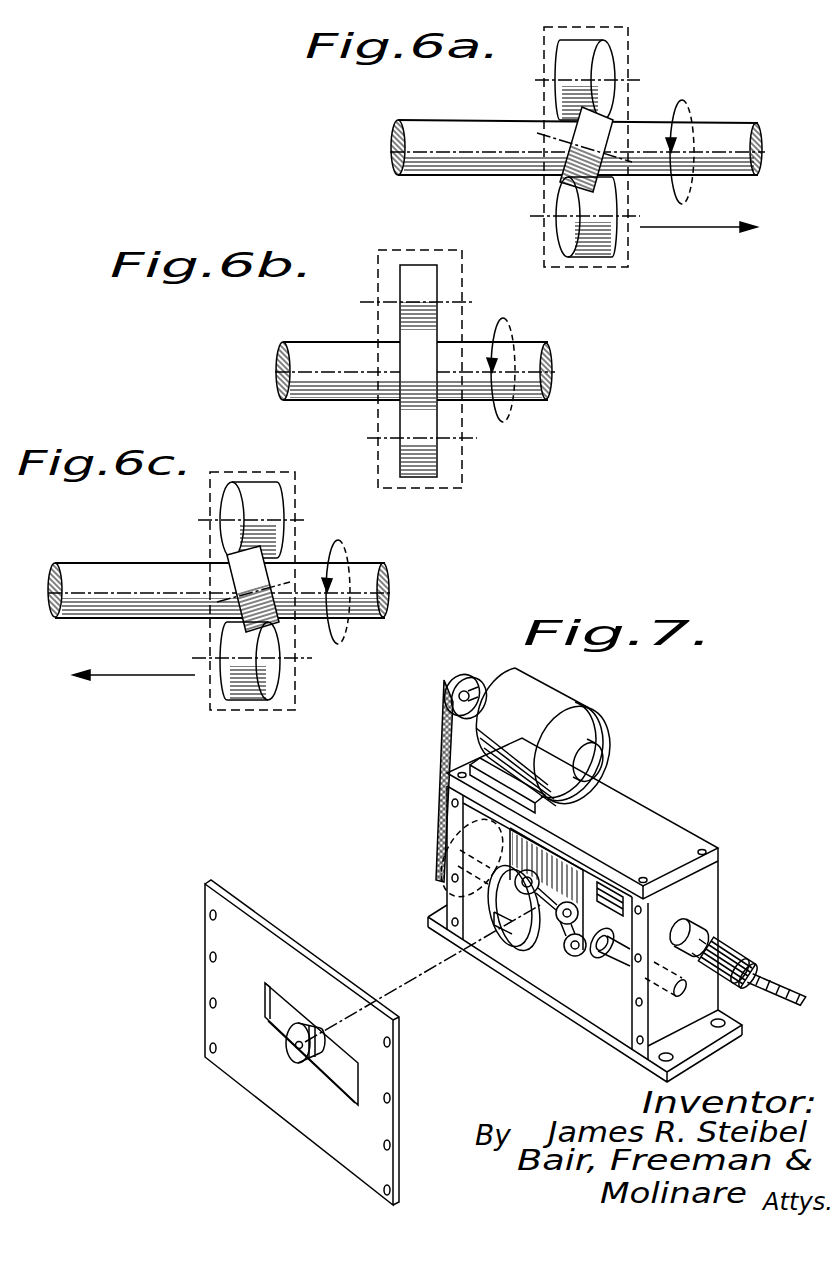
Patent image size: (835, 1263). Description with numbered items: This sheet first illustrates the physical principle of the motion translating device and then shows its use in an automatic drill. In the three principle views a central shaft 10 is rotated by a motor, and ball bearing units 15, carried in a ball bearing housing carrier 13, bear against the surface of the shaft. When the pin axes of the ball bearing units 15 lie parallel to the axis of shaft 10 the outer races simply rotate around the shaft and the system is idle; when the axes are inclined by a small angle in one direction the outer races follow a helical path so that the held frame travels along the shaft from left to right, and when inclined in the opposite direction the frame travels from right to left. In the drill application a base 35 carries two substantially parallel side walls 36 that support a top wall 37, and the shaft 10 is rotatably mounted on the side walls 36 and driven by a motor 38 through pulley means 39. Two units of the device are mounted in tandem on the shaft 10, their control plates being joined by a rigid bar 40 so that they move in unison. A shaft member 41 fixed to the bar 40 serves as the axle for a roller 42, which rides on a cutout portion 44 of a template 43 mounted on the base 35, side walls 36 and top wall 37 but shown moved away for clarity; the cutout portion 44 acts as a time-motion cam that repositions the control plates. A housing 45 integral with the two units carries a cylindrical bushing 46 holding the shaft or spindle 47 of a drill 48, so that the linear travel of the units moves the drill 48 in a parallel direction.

In FIG. 6A, the central shaft 10 is at (737, 128).
In FIG. 6B, the central shaft 10 is at (528, 352).
In FIG. 6C, the central shaft 10 is at (365, 575).
In FIG. 7, the central shaft 10 is at (620, 957).
In FIG. 6A, the ball bearing housing carrier 13 is at (623, 43).
In FIG. 6B, the ball bearing housing carrier 13 is at (457, 273).
In FIG. 6C, the ball bearing housing carrier 13 is at (290, 502).
In FIG. 6A, the ball bearing unit 15 is at (607, 120).
In FIG. 6B, the ball bearing unit 15 is at (417, 272).
In FIG. 6C, the ball bearing unit 15 is at (258, 488).
In FIG. 7, the base 35 is at (618, 1017).
In FIG. 7, the side walls 36 is at (470, 895).
In FIG. 7, the top wall 37 is at (677, 847).
In FIG. 7, the motor 38 is at (557, 700).
In FIG. 7, the pulley means 39 is at (438, 870).
In FIG. 7, the rigid bar 40 is at (528, 920).
In FIG. 7, the shaft member 41 is at (470, 930).
In FIG. 7, the roller 42 is at (290, 1032).
In FIG. 7, the template 43 is at (222, 933).
In FIG. 7, the cutout portion 44 is at (340, 1088).
In FIG. 7, the housing 45 is at (550, 867).
In FIG. 7, the cylindrical bushing 46 is at (610, 895).
In FIG. 7, the shaft or spindle 47 is at (712, 943).
In FIG. 7, the drill 48 is at (743, 947).